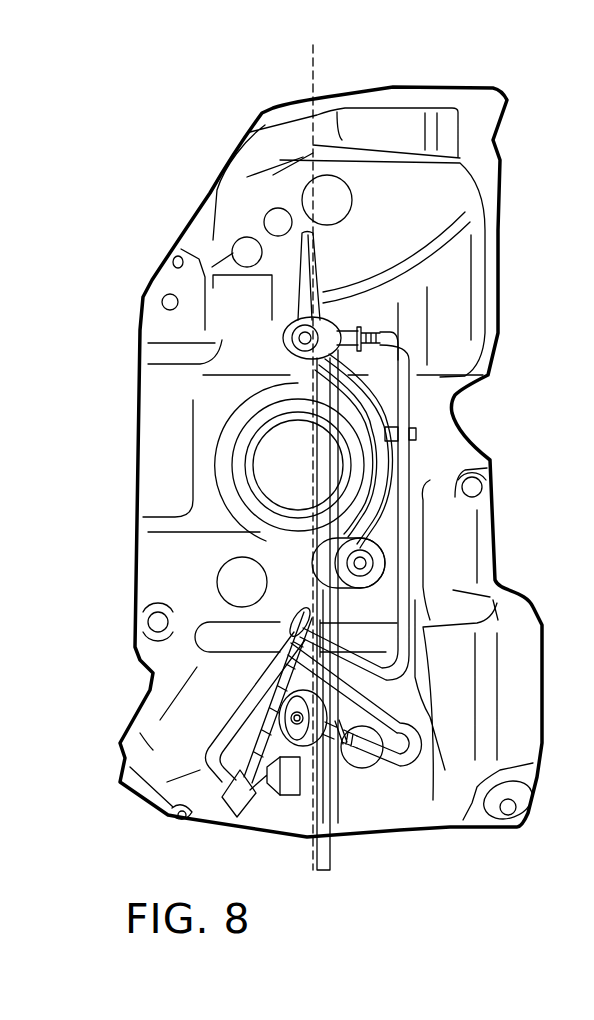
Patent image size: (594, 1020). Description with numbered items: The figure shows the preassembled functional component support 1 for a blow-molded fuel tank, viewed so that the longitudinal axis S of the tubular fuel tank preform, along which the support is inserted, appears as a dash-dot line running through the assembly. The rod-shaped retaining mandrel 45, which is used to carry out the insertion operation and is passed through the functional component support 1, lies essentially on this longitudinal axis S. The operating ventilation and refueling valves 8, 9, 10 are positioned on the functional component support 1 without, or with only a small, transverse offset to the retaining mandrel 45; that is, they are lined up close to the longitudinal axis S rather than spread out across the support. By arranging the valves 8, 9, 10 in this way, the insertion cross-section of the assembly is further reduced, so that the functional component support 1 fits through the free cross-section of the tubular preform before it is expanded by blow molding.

The functional component support 1 is at (393, 493).
The operating ventilation and refueling valve 8 is at (287, 338).
The operating ventilation and refueling valve 9 is at (282, 703).
The operating ventilation and refueling valve 10 is at (310, 560).
The retaining mandrel 45 is at (335, 412).
The longitudinal axis S is at (319, 84).